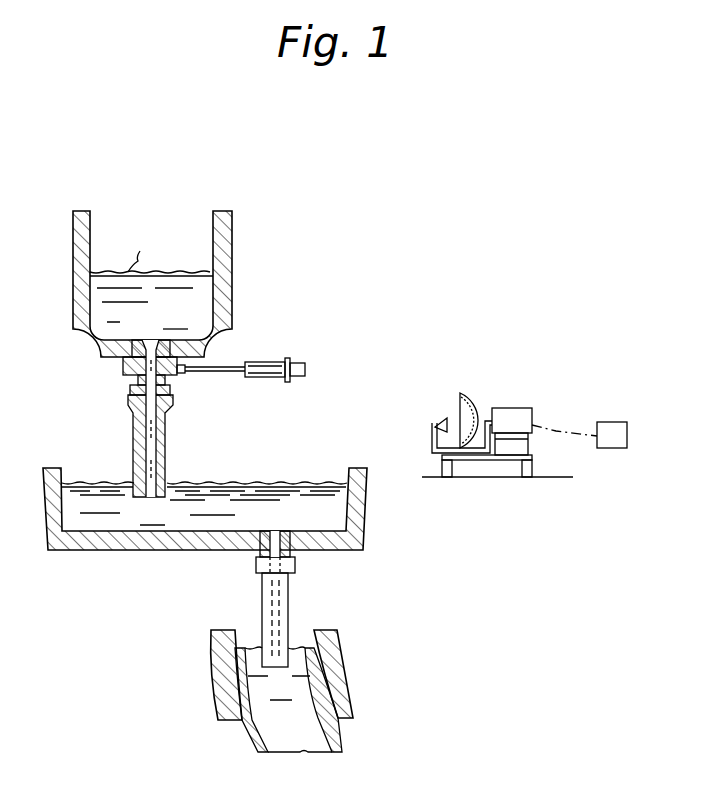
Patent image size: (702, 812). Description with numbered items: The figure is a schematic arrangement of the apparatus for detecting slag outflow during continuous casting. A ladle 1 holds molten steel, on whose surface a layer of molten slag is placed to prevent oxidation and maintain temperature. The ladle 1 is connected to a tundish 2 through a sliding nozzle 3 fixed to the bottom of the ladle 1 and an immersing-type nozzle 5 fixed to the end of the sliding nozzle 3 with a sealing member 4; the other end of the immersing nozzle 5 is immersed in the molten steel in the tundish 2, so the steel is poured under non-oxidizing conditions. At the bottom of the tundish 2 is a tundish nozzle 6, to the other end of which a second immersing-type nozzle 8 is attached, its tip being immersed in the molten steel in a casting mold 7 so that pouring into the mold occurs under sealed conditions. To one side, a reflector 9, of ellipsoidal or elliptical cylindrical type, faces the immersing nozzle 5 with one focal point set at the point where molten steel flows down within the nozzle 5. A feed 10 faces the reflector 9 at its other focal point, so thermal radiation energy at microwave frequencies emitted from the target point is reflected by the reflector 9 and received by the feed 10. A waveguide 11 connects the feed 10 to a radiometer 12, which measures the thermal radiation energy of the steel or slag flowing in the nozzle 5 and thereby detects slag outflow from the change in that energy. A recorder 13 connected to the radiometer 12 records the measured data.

The ladle 1 is at (232, 255).
The tundish 2 is at (77, 548).
The sliding nozzle 3 is at (123, 366).
The sealing member 4 is at (170, 392).
The immersing-type nozzle 5 is at (133, 443).
The tundish nozzle 6 is at (295, 562).
The casting mold 7 is at (211, 688).
The immersing-type nozzle 8 is at (262, 607).
The reflector 9 is at (468, 398).
The feed 10 is at (441, 420).
The waveguide 11 is at (432, 438).
The radiometer 12 is at (513, 412).
The recorder 13 is at (614, 448).